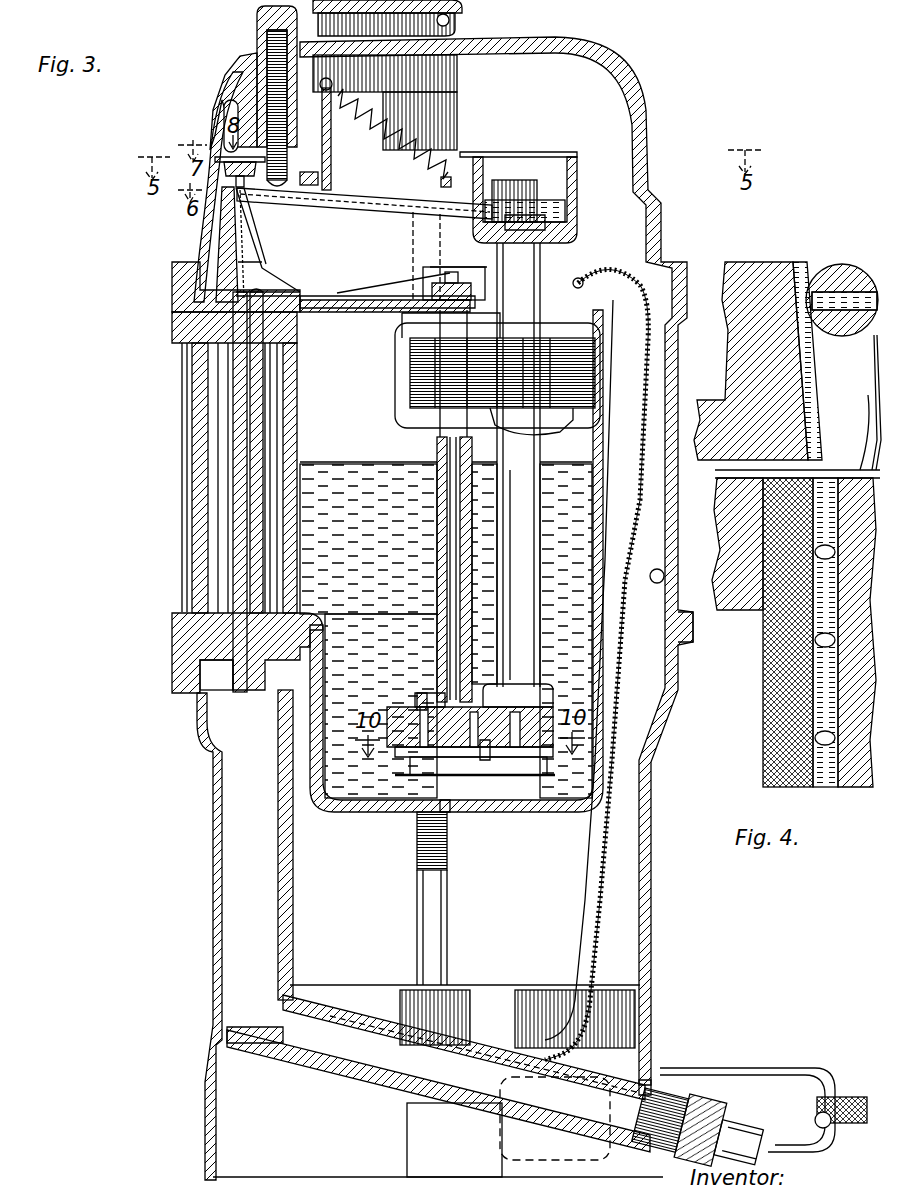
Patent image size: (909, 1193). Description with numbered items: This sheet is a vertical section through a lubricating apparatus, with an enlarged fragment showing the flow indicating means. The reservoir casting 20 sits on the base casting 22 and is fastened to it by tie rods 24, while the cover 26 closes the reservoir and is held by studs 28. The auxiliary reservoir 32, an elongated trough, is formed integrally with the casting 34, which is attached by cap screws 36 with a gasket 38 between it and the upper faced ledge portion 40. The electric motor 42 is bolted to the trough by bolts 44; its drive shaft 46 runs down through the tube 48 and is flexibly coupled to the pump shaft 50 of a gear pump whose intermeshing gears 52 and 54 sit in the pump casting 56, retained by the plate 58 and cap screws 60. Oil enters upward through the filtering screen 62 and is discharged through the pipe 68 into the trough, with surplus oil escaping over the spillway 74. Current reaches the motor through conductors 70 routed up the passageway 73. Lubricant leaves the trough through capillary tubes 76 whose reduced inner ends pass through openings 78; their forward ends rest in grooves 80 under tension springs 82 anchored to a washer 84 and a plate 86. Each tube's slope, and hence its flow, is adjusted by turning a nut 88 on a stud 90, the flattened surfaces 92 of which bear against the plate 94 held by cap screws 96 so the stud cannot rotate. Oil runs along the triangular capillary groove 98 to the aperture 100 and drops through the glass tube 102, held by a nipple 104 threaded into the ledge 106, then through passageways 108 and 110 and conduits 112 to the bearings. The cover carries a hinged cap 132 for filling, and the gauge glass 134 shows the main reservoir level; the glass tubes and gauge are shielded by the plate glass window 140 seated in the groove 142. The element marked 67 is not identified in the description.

In FIG. 3, the reservoir casting 20 is at (686, 632).
In FIG. 3, the base casting 22 is at (652, 905).
In FIG. 3, the tie rods 24 is at (447, 916).
In FIG. 3, the cover 26 is at (672, 232).
In FIG. 3, the studs 28 is at (425, 537).
In FIG. 3, the auxiliary reservoir 32 is at (578, 222).
In FIG. 3, the casting 34 is at (200, 302).
In FIG. 4, the casting 34 is at (712, 410).
In FIG. 3, the cap screws 36 is at (248, 263).
In FIG. 3, the gasket 38 is at (358, 296).
In FIG. 3, the upper faced ledge portion 40 is at (290, 336).
In FIG. 3, the electric motor 42 is at (420, 374).
In FIG. 3, the bolts 44 is at (535, 420).
In FIG. 3, the drive shaft 46 is at (445, 455).
In FIG. 3, the tube 48 is at (470, 485).
In FIG. 3, the pump shaft 50 is at (433, 703).
In FIG. 3, the gear 52 is at (483, 750).
In FIG. 3, the gear 54 is at (527, 753).
In FIG. 3, the pump casting 56 is at (548, 740).
In FIG. 3, the plate 58 is at (405, 800).
In FIG. 3, the cap screws 60 is at (395, 760).
In FIG. 3, the filtering screen 62 is at (507, 812).
In FIG. 3, the nut 67 is at (309, 168).
In FIG. 3, the pipe 68 is at (520, 180).
In FIG. 3, the conductors 70 is at (596, 936).
In FIG. 3, the passageway 73 is at (664, 578).
In FIG. 3, the spillway 74 is at (578, 200).
In FIG. 3, the capillary tubes 76 is at (355, 210).
In FIG. 4, the capillary tubes 76 is at (870, 262).
In FIG. 3, the openings 78 is at (455, 266).
In FIG. 3, the grooves 80 is at (247, 227).
In FIG. 4, the grooves 80 is at (870, 370).
In FIG. 3, the tension springs 82 is at (407, 127).
In FIG. 3, the washer 84 is at (437, 222).
In FIG. 3, the plate 86 is at (332, 160).
In FIG. 3, the nuts 88 is at (257, 30).
In FIG. 3, the studs 90 is at (242, 78).
In FIG. 3, the flattened surfaces 92 is at (267, 58).
In FIG. 3, the plate 94 is at (213, 140).
In FIG. 3, the cap screws 96 is at (255, 195).
In FIG. 3, the capillary groove 98 is at (247, 240).
In FIG. 4, the capillary groove 98 is at (800, 262).
In FIG. 3, the aperture 100 is at (240, 290).
In FIG. 4, the aperture 100 is at (862, 420).
In FIG. 3, the glass tube 102 is at (240, 488).
In FIG. 4, the glass tube 102 is at (790, 698).
In FIG. 3, the nipples 104 is at (225, 672).
In FIG. 3, the ledge 106 is at (222, 640).
In FIG. 3, the passageway 108 is at (218, 870).
In FIG. 3, the passageway 110 is at (340, 1060).
In FIG. 3, the conduits 112 is at (748, 1095).
In FIG. 3, the hinged cap 132 is at (462, 18).
In FIG. 3, the glass tube 134 is at (230, 430).
In FIG. 3, the plate glass window 140 is at (198, 545).
In FIG. 3, the groove 142 is at (245, 600).